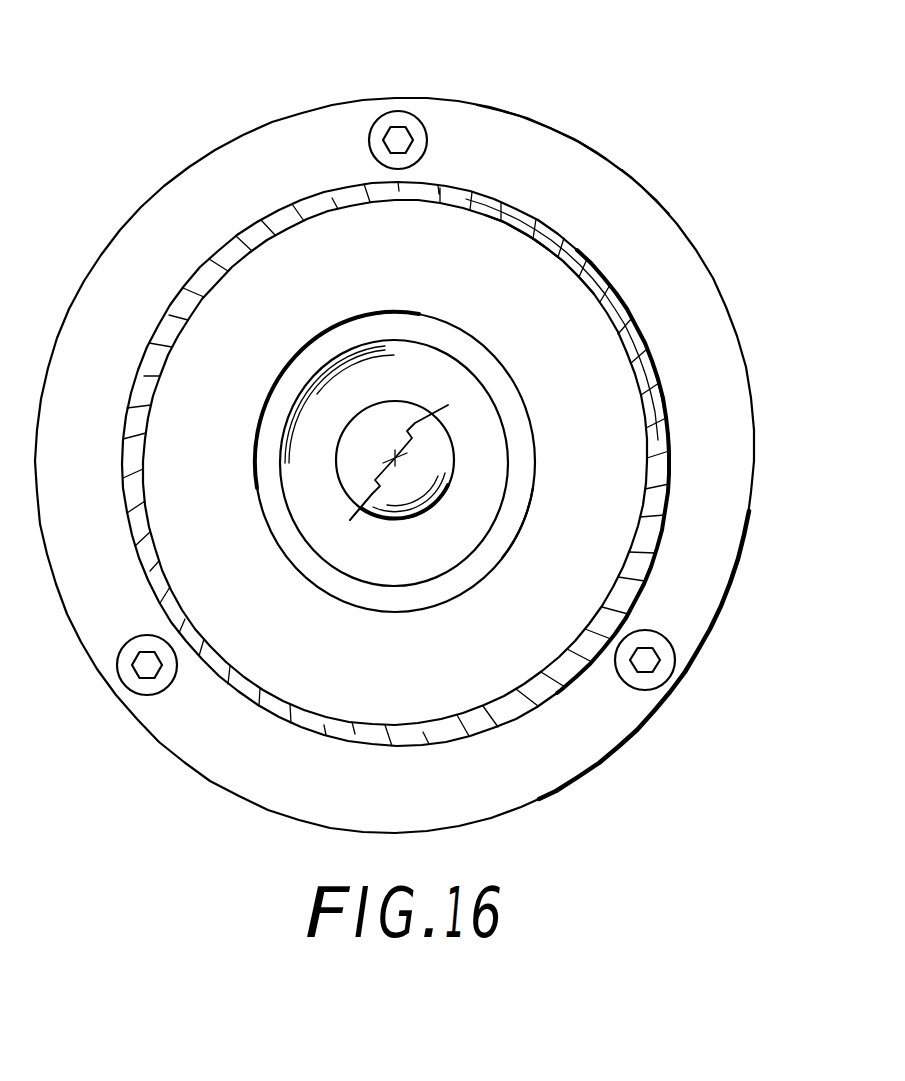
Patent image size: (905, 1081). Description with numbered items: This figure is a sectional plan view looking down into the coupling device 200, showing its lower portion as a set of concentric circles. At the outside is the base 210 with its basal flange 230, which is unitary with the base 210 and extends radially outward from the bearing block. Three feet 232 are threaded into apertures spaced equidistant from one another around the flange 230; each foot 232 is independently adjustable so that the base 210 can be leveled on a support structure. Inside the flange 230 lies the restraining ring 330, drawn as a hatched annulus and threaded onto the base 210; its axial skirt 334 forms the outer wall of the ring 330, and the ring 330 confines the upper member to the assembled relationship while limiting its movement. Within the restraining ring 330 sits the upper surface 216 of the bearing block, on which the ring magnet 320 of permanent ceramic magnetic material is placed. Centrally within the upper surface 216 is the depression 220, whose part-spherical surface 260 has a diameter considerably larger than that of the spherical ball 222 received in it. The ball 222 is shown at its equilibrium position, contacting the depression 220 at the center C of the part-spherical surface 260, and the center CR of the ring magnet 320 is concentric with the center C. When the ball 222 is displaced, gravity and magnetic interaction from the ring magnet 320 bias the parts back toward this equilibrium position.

The coupling device 200 is at (431, 86).
The base 210 is at (556, 134).
The basal flange 230 is at (588, 175).
The feet 232 is at (370, 142).
The restraining ring 330 is at (243, 226).
The axial skirt 334 is at (622, 335).
The ring magnet 320 is at (535, 272).
The part-spherical surface 260 is at (490, 476).
The upper surface 216 is at (502, 530).
The depression 220 is at (503, 422).
The spherical ball 222 is at (405, 378).
The center C is at (414, 451).
The center of the ring magnet CR is at (350, 524).